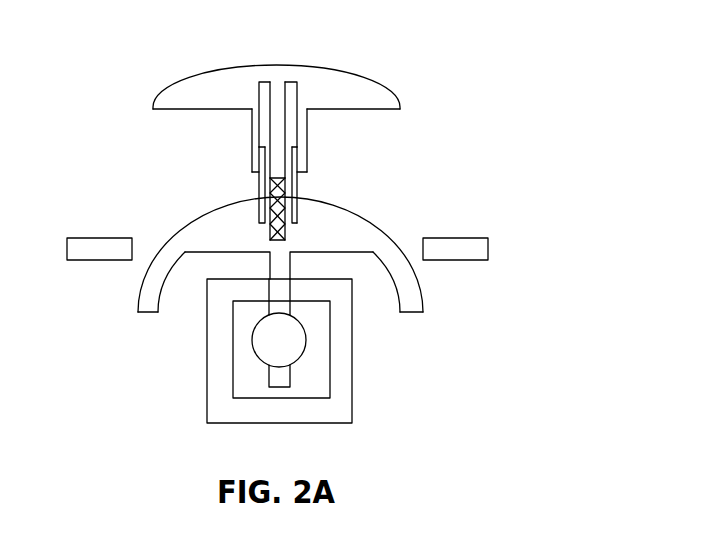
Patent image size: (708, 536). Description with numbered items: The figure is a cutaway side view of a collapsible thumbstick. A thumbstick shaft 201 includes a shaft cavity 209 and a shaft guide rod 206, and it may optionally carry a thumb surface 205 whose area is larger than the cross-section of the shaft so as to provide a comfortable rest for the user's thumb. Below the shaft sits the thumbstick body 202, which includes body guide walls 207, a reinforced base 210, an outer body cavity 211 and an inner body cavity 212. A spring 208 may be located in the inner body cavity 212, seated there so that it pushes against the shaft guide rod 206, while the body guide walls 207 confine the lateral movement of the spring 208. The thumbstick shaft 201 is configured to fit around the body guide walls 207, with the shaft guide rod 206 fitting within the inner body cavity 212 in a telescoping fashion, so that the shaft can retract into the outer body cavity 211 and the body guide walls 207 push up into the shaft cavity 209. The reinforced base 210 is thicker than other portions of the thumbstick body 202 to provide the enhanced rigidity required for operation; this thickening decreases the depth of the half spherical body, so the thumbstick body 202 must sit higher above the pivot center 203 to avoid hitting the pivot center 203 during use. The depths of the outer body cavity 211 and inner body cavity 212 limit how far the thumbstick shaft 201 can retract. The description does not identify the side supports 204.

The thumbstick shaft 201 is at (308, 125).
The thumbstick body 202 is at (375, 226).
The pivot center 203 is at (303, 352).
The side supports 204 is at (488, 250).
The thumb surface 205 is at (400, 101).
The shaft guide rod 206 is at (280, 109).
The body guide walls 207 is at (257, 171).
The spring 208 is at (286, 193).
The shaft cavity 209 is at (292, 97).
The reinforced base 210 is at (212, 252).
The outer body cavity 211 is at (257, 198).
The inner body cavity 212 is at (293, 182).